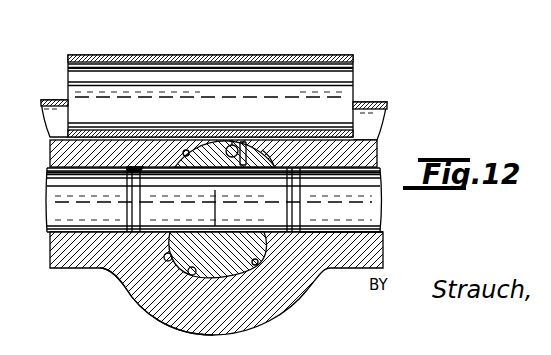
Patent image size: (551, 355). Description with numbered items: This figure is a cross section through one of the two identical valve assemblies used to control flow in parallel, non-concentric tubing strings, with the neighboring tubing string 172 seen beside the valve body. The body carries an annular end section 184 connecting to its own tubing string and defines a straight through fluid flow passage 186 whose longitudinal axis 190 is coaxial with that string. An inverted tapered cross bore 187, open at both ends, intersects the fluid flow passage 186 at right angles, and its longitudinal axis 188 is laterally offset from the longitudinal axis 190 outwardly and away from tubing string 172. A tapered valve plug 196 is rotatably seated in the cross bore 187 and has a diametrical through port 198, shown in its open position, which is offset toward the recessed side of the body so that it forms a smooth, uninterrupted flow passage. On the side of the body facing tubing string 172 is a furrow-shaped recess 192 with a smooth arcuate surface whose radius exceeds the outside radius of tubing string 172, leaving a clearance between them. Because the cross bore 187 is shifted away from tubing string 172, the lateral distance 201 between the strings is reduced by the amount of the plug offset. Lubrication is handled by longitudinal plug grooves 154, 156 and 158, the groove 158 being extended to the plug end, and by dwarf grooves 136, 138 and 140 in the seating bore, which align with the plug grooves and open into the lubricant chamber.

The tubing string 172 is at (350, 56).
The furrow-shaped recess 192 is at (378, 137).
The dwarf groove 140 is at (186, 150).
The longitudinal plug groove 156 is at (232, 146).
The annular end section 184 is at (255, 150).
The lateral distance 201 is at (270, 160).
The longitudinal plug groove 154 is at (157, 253).
The tapered valve plug 196 is at (169, 245).
The longitudinal axis of cross bore 188 is at (215, 205).
The longitudinal plug groove 158 is at (250, 236).
The longitudinal axis of passage 190 is at (263, 200).
The dwarf groove 136 is at (300, 293).
The dwarf groove 138 is at (125, 286).
The fluid flow passage 186 is at (319, 236).
The diametrical through port 198 is at (256, 260).
The tapered cross bore 187 is at (192, 275).